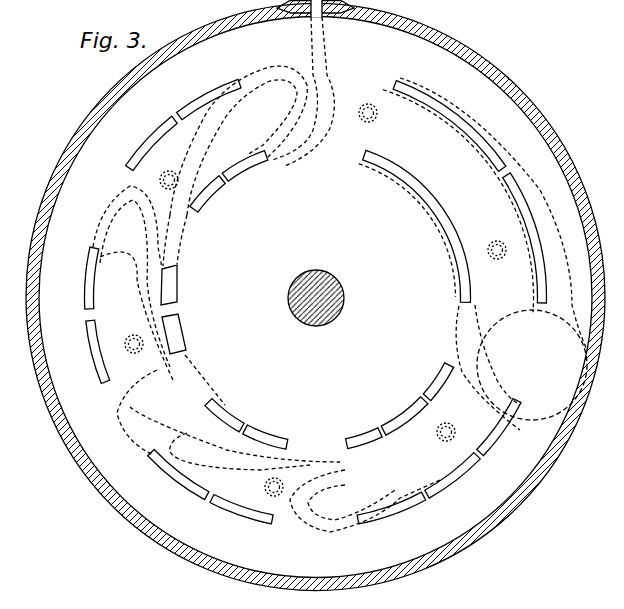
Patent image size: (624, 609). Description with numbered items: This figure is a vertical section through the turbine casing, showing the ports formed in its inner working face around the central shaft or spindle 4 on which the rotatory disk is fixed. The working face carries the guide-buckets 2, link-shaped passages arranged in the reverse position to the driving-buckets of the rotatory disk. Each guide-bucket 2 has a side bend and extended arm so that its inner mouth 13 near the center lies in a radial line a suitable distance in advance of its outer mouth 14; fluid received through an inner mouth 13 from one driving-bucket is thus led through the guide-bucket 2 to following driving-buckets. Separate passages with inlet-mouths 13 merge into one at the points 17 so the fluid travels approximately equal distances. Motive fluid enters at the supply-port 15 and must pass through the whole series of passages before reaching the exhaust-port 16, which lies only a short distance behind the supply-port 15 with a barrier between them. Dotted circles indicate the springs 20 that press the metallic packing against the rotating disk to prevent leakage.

The guide-buckets 2 is at (291, 93).
The shaft or spindle 4 is at (305, 283).
The inner mouth 13 is at (212, 199).
The outer mouth 14 is at (150, 140).
The supply-port 15 is at (322, 32).
The exhaust-port 16 is at (497, 327).
The merging points 17 is at (177, 343).
The springs 20 is at (168, 172).